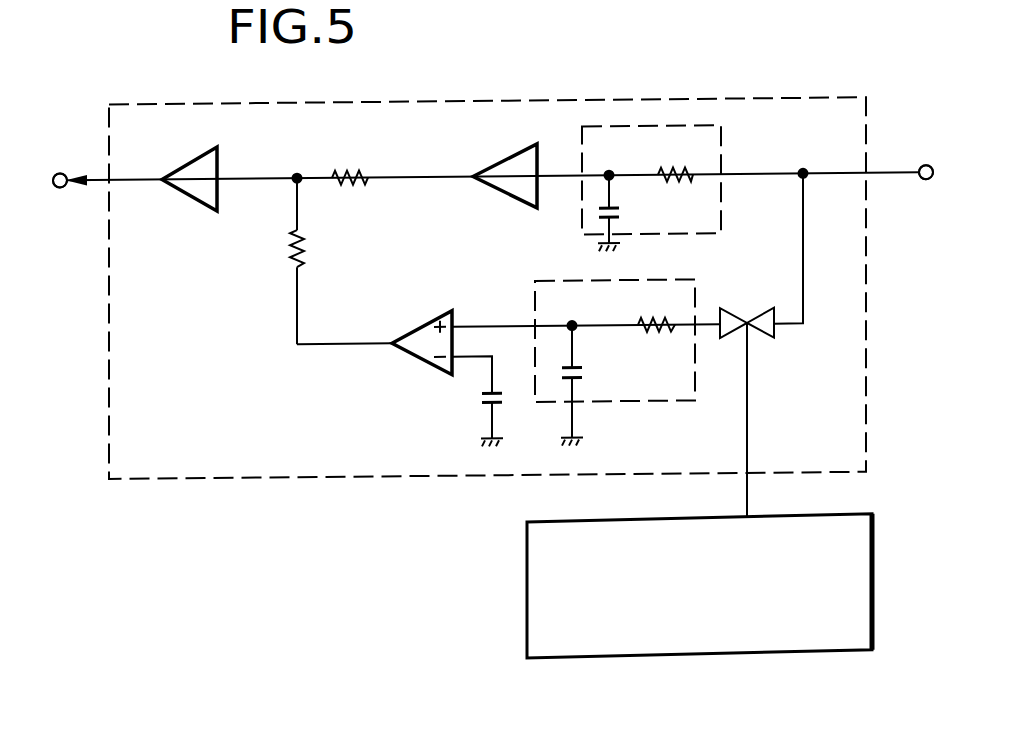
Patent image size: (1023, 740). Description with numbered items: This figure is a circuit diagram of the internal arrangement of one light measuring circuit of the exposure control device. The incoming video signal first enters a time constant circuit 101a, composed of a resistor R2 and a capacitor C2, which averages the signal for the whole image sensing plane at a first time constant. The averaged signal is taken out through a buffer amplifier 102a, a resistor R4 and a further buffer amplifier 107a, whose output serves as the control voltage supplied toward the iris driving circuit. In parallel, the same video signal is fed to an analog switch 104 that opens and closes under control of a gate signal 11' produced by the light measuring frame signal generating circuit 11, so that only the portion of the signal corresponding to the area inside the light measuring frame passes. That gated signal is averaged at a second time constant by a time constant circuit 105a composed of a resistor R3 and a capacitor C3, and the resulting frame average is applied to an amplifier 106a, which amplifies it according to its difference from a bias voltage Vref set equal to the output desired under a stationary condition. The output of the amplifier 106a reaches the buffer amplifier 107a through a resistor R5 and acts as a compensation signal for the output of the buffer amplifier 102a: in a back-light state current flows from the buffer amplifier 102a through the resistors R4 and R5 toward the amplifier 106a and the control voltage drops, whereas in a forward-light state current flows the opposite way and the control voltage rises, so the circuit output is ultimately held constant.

The buffer amplifier 107a is at (185, 202).
The buffer amplifier 102a is at (500, 194).
The time constant circuit 101a is at (689, 187).
The resistor R2 is at (664, 178).
The capacitor C2 is at (618, 223).
The resistor R4 is at (362, 173).
The resistor R5 is at (303, 253).
The amplifier 106a is at (410, 356).
The voltage Vref is at (487, 403).
The time constant circuit 105a is at (615, 366).
The resistor R3 is at (645, 324).
The capacitor C3 is at (585, 378).
The analog switch 104 is at (747, 312).
The gate signal 11' is at (777, 419).
The light measuring frame signal generating circuit 11 is at (727, 585).